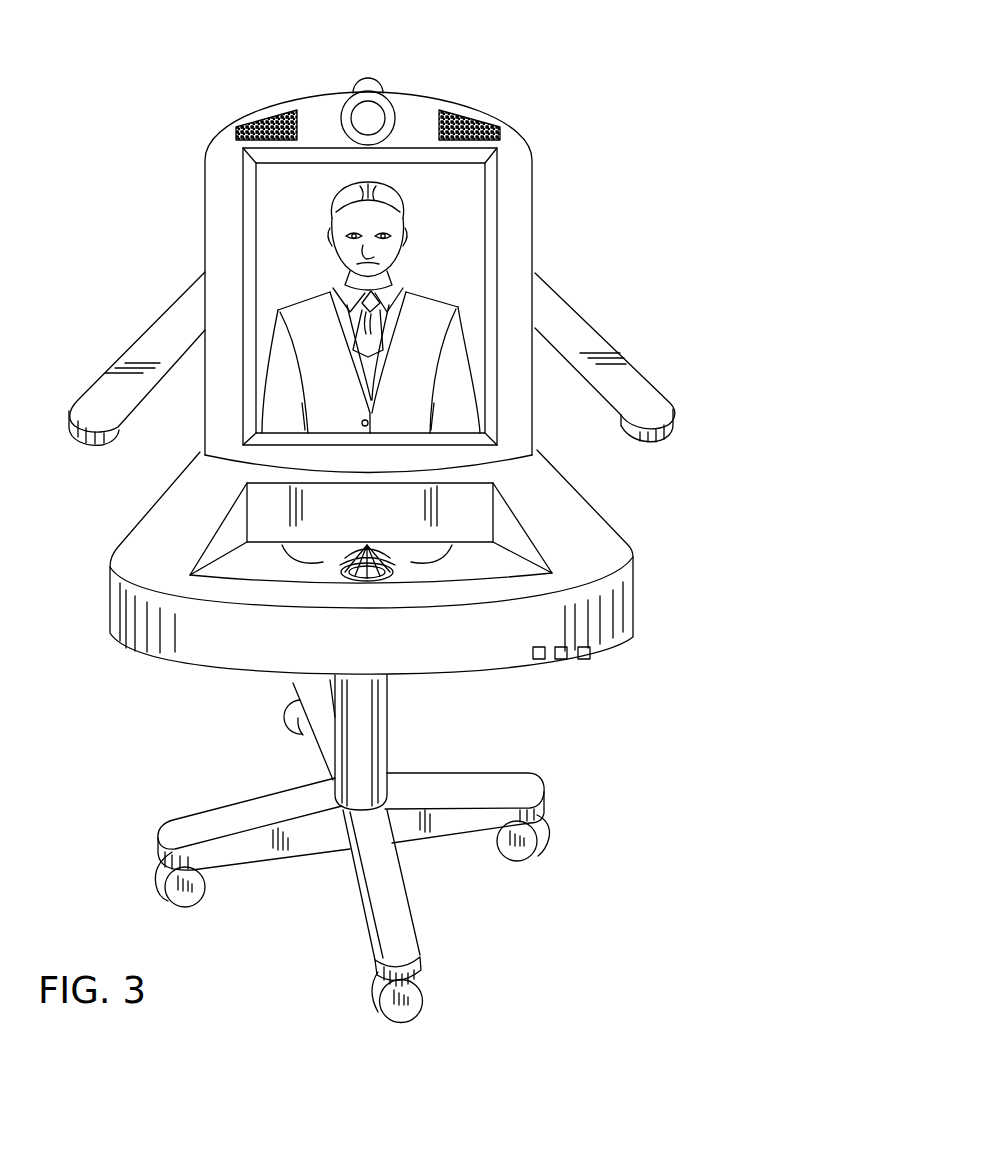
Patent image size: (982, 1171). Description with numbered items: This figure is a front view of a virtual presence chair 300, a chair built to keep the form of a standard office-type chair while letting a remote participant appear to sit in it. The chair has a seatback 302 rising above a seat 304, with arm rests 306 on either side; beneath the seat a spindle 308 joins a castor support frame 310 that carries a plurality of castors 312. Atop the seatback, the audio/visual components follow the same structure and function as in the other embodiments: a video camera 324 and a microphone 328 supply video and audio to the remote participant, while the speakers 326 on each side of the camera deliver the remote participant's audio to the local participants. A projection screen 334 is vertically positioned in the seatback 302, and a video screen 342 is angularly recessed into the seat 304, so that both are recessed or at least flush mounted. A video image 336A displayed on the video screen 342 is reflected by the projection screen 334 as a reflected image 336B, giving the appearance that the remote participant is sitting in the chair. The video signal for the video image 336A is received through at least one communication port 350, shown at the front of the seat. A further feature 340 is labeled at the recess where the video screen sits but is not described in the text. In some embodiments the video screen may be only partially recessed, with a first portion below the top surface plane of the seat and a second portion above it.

The virtual presence chair 300 is at (592, 98).
The seatback 302 is at (535, 246).
The seat 304 is at (578, 518).
The arm rests 306 is at (122, 363).
The spindle 308 is at (375, 717).
The castor support frame 310 is at (442, 800).
The castors 312 is at (542, 825).
The video camera 324 is at (393, 110).
The speakers 326 is at (253, 117).
The microphone 328 is at (365, 88).
The projection screen 334 is at (463, 187).
The video image 336A is at (318, 576).
The reflected image 336B is at (300, 270).
The tray recess 340 is at (237, 540).
The video screen 342 is at (462, 567).
The communication port 350 is at (572, 682).